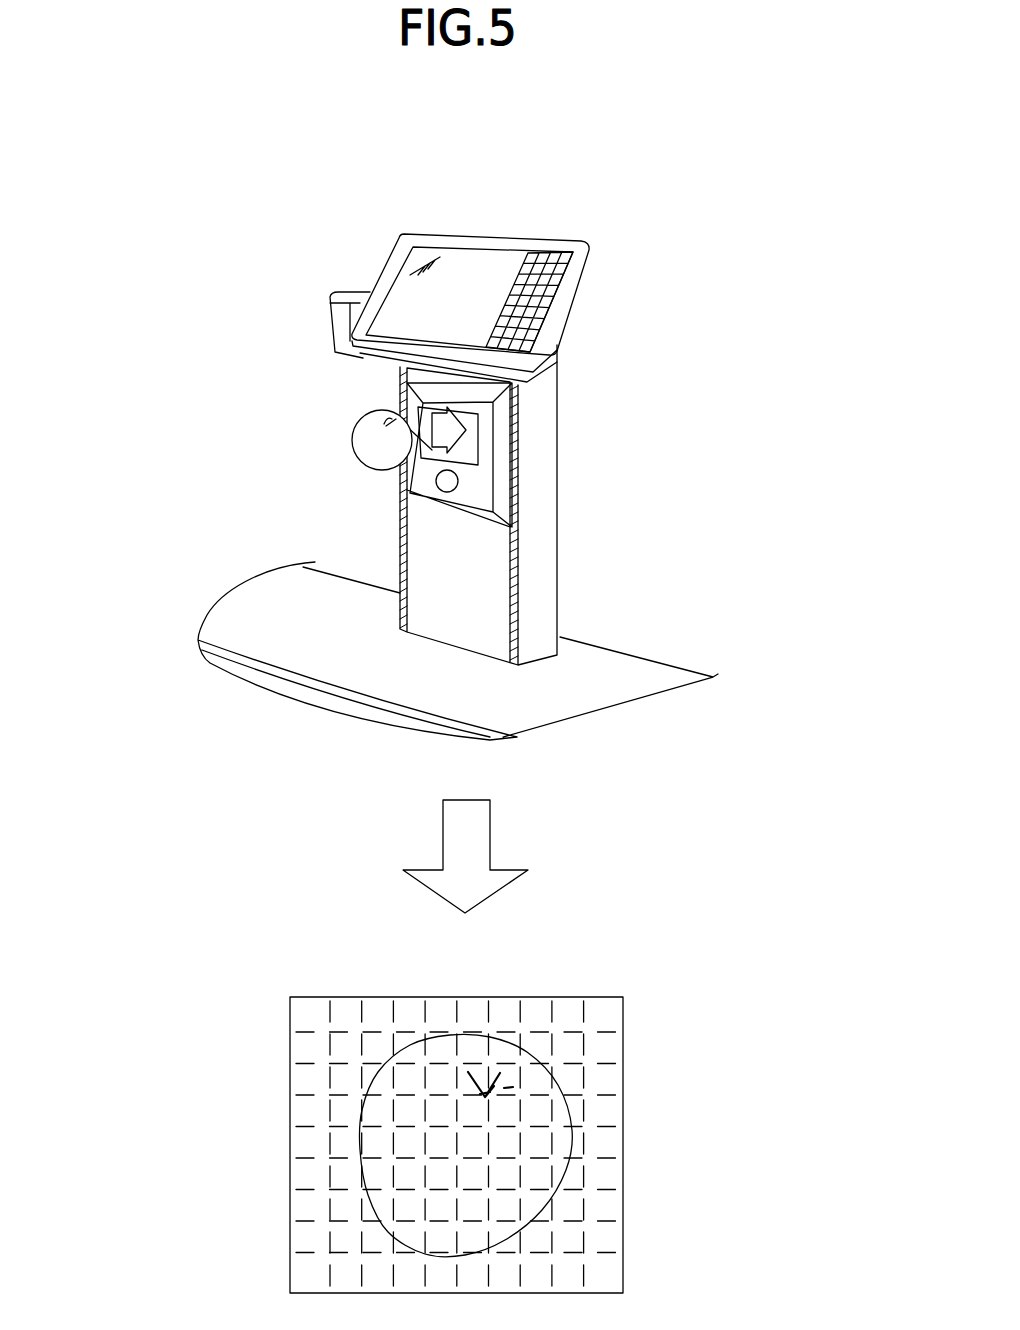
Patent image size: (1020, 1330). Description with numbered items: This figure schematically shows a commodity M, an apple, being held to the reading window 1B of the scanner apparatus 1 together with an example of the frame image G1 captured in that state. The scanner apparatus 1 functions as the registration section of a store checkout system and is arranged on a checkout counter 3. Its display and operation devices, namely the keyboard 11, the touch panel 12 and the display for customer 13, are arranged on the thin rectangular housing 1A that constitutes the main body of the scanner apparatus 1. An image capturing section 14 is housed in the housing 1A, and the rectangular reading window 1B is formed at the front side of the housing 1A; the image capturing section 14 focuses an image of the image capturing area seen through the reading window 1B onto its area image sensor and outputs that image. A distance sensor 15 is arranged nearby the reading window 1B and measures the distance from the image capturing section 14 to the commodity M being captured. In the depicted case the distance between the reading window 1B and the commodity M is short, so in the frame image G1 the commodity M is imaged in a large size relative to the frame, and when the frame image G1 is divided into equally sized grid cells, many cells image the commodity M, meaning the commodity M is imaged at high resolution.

The scanner apparatus 1 is at (474, 420).
The housing 1A is at (543, 538).
The reading window 1B is at (470, 452).
The checkout counter 3 is at (628, 672).
The keyboard 11 is at (563, 252).
The touch panel 12 is at (466, 258).
The display for customer 13 is at (352, 295).
The image capturing section 14 is at (478, 417).
The distance sensor 15 is at (447, 492).
The commodity M is at (352, 433).
The frame image G1 is at (623, 1005).